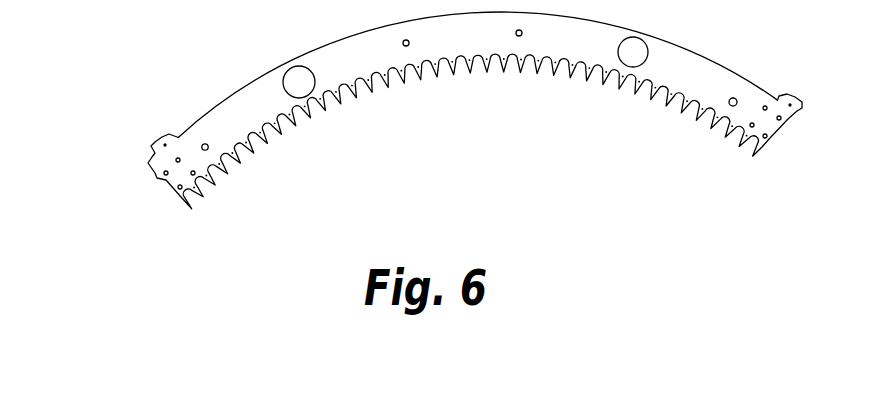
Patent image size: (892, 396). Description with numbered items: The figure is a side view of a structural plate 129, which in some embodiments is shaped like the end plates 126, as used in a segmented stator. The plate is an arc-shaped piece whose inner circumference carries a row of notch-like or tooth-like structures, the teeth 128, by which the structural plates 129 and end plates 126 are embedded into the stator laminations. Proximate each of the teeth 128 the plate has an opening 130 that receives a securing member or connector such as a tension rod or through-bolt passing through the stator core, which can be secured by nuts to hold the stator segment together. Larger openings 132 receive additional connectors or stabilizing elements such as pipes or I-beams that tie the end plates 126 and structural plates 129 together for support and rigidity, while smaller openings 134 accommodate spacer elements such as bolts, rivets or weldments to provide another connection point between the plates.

The end plate 126 is at (156, 176).
The structural plate 129 is at (441, 139).
The teeth 128 is at (212, 194).
The opening 130 is at (224, 172).
The opening 132 is at (632, 51).
The opening 134 is at (519, 36).